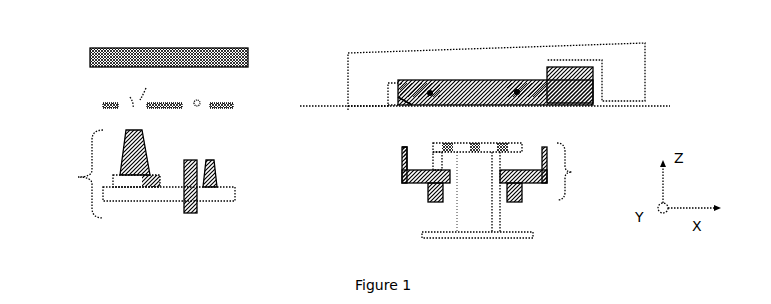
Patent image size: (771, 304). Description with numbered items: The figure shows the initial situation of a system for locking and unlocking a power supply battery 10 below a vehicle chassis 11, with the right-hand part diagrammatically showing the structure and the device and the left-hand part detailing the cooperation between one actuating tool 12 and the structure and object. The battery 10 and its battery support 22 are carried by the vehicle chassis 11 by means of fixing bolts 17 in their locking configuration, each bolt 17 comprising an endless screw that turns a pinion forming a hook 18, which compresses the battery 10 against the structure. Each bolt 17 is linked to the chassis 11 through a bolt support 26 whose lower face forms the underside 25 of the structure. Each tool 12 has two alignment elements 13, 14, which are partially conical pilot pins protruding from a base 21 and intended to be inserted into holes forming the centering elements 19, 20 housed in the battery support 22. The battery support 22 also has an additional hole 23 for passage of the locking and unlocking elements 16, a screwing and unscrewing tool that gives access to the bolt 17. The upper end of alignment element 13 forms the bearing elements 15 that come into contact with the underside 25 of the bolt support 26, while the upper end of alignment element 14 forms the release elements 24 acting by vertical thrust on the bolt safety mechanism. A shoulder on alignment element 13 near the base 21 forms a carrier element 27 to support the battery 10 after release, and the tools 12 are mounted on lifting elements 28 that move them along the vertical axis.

The power supply battery 10 is at (113, 80).
The vehicle chassis 11 is at (390, 63).
The actuating tool 12 is at (314, 174).
The alignment element 13 is at (145, 185).
The alignment element 14 is at (207, 188).
The bearing element 15 is at (134, 130).
The locking and/or unlocking element 16 is at (182, 188).
The fixing bolt 17 is at (413, 100).
The hook 18 is at (527, 103).
The centering element 19 is at (133, 97).
The centering element 20 is at (197, 103).
The base 21 is at (235, 198).
The battery support 22 is at (100, 101).
The additional hole 23 is at (188, 110).
The release element 24 is at (214, 156).
The underside 25 is at (155, 68).
The bolt support 26 is at (186, 48).
The carrier element 27 is at (155, 175).
The lifting element 28 is at (420, 195).